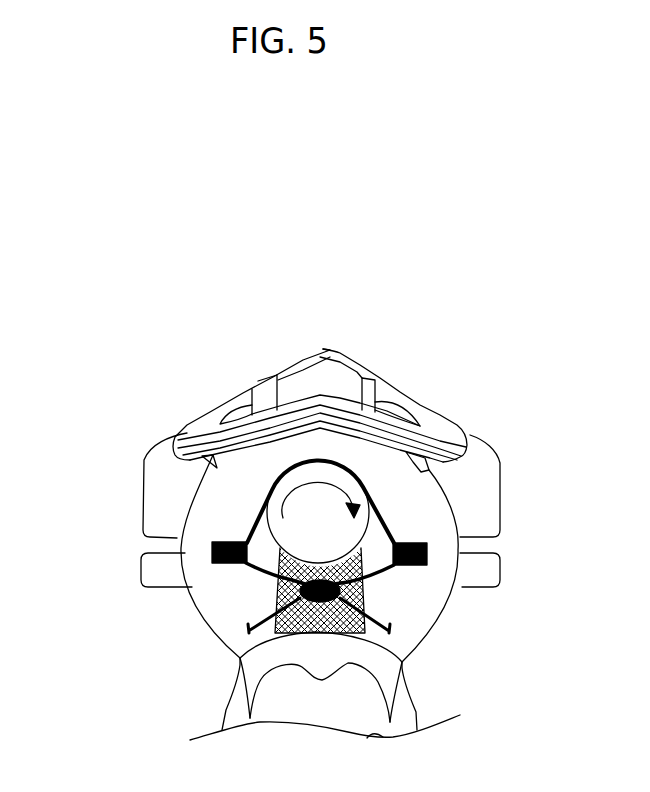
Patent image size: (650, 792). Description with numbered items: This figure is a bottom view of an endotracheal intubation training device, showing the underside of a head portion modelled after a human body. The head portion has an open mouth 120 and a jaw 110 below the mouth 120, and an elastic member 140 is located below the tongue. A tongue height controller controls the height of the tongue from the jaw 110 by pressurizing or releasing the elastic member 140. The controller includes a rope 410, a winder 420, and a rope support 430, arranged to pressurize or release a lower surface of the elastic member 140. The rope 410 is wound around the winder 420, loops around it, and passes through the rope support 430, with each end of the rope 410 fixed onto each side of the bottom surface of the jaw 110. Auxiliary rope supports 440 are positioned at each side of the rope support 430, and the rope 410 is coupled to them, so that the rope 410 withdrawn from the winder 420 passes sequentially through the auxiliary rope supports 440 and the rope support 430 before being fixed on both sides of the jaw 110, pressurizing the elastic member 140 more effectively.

The jaw 110 is at (213, 497).
The open mouth 120 is at (205, 427).
The elastic member 140 is at (275, 589).
The rope 410 is at (380, 623).
The winder 420 is at (357, 517).
The rope support 430 is at (367, 581).
The auxiliary rope supports 440 is at (428, 548).